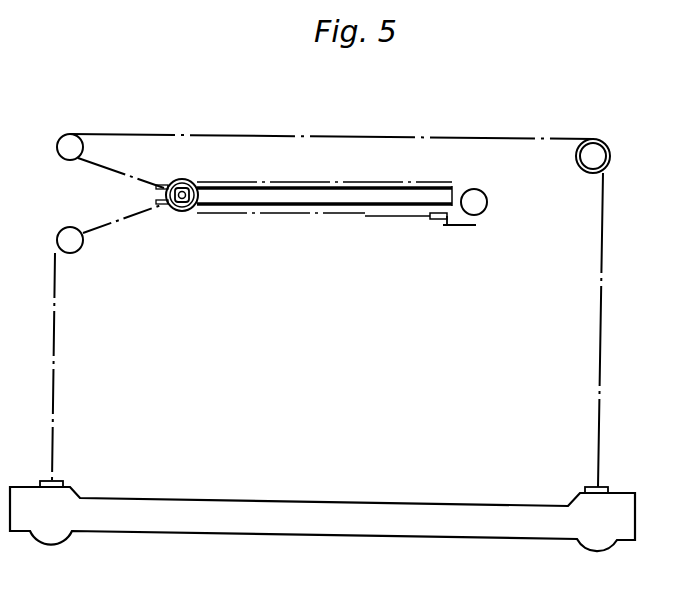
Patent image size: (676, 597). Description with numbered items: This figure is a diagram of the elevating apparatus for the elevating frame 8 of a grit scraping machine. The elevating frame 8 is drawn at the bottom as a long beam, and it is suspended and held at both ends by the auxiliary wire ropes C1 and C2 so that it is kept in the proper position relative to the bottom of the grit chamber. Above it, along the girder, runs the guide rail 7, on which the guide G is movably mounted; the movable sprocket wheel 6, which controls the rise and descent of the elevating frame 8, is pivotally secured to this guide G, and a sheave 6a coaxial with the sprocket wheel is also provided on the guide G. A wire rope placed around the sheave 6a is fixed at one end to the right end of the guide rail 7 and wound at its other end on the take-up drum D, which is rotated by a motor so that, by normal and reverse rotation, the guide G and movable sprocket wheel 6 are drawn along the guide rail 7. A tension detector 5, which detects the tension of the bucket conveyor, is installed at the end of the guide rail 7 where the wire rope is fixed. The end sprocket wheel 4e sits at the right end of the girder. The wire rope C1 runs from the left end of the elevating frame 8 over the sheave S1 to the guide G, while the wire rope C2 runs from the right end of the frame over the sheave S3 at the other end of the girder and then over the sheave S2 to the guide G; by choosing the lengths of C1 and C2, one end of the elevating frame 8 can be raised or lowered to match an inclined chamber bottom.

The sheave S1 is at (66, 237).
The sheave S2 is at (73, 147).
The sheave S3 is at (587, 166).
The end sprocket wheel 4e is at (603, 142).
The movable sprocket wheel 6 is at (177, 186).
The guide G is at (189, 184).
The sheave 6a is at (174, 214).
The guide rail 7 is at (359, 190).
The take-up drum D is at (488, 202).
The tension detector 5 is at (441, 221).
The auxiliary wire rope C1 is at (55, 363).
The auxiliary wire rope C2 is at (600, 343).
The elevating frame 8 is at (352, 514).